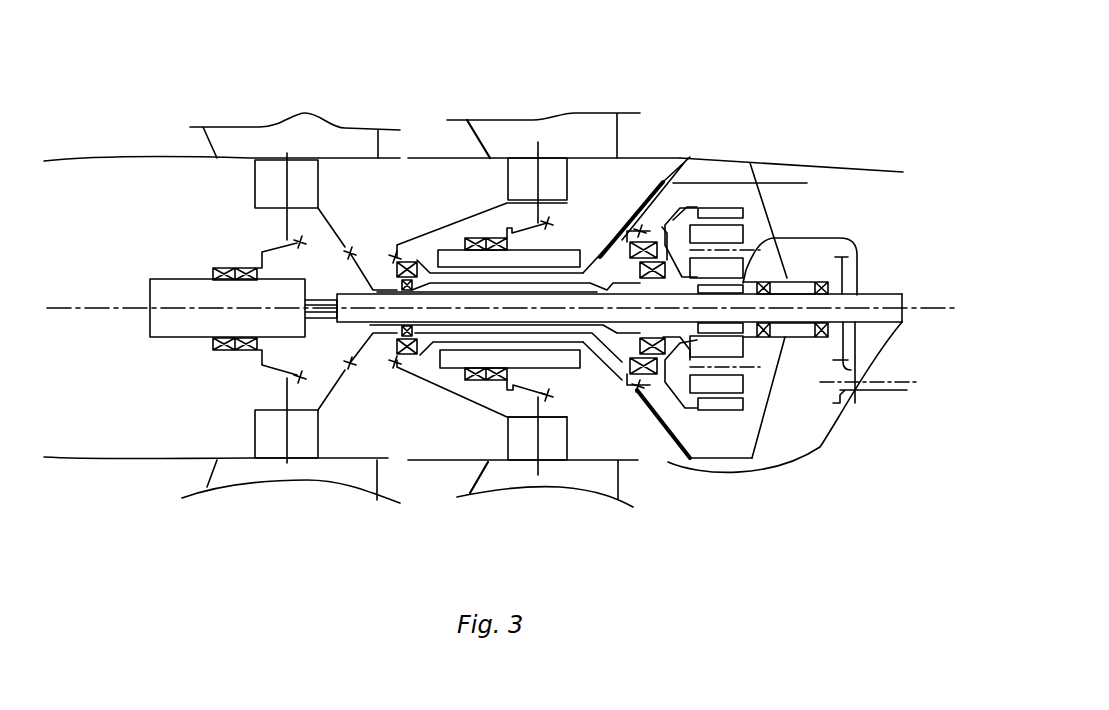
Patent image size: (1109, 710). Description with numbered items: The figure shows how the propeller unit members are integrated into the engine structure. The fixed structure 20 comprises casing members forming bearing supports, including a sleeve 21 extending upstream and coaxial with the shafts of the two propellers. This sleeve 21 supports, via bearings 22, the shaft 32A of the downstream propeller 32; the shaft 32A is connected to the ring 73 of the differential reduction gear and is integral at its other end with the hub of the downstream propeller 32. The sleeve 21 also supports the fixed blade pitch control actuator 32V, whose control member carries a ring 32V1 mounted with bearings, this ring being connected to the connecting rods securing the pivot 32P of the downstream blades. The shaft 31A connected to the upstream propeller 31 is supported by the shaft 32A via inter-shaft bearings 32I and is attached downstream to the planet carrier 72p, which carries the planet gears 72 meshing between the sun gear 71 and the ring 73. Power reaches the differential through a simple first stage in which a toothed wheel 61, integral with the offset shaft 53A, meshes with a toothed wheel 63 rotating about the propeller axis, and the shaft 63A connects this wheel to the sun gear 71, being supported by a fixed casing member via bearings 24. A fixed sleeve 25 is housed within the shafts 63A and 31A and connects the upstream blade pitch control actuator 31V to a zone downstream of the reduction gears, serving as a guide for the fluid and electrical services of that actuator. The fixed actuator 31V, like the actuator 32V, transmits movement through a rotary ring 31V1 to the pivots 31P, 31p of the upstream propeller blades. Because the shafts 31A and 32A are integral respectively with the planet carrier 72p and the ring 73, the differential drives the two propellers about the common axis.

The fixed structure 20 is at (700, 158).
The sleeve 21 is at (447, 265).
The bearings 22 is at (643, 247).
The bearings 24 is at (833, 256).
The fixed sleeve 25 is at (800, 337).
The upstream propeller 31 is at (237, 142).
The pivot of the upstream propeller blades 31p is at (285, 182).
The pivots of the upstream propeller blades 31P is at (287, 440).
The shaft of the upstream propeller 31A is at (428, 233).
The upstream propeller blade pitch control actuator 31V is at (165, 295).
The rotary ring 31V1 is at (213, 350).
The downstream propeller 32 is at (497, 475).
The blade pitch control actuator of the downstream propeller 32V is at (492, 237).
The ring 32V1 is at (480, 250).
The pivot of the blades 32P is at (547, 177).
The shaft of the downstream propeller 32A is at (575, 268).
The inter-shaft bearings 32I is at (630, 350).
The shaft 53A is at (892, 393).
The toothed wheel 61 is at (851, 370).
The toothed wheel 63 is at (845, 335).
The shaft 63A is at (782, 322).
The sun gear 71 is at (820, 283).
The planet gears 72 is at (733, 268).
The planet carrier 72p is at (755, 212).
The ring 73 is at (720, 208).